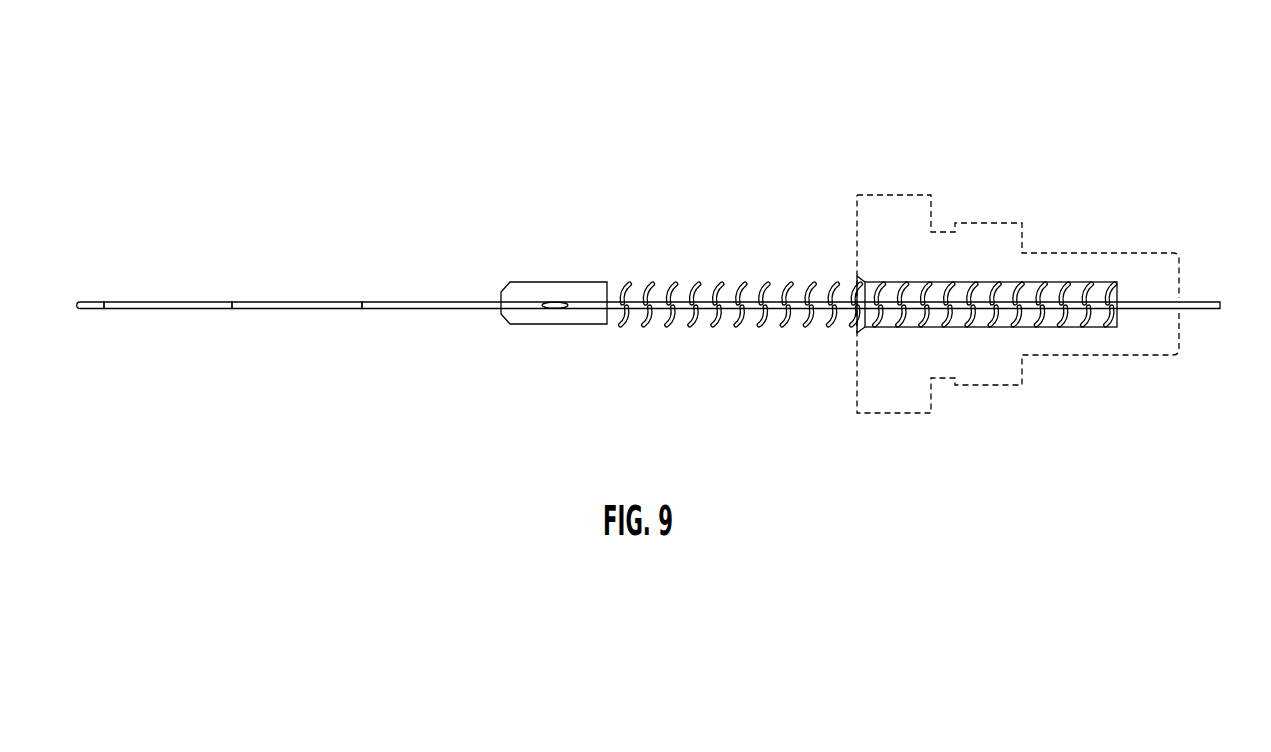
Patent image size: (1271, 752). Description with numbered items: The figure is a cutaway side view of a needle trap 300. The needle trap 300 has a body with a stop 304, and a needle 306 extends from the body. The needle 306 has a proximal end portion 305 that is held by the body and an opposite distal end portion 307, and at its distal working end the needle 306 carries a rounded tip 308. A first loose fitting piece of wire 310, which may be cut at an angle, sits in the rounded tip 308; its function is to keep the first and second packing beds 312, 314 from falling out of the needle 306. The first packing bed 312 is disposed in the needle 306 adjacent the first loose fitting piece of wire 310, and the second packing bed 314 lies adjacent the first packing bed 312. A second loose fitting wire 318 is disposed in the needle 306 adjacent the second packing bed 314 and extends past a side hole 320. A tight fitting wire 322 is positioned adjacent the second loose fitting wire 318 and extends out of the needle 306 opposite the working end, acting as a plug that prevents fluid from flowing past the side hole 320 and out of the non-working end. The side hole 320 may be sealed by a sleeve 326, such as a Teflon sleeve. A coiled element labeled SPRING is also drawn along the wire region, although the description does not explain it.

The needle trap 300 is at (702, 105).
The stop 304 is at (854, 394).
The proximal end portion 305 is at (108, 319).
The needle 306 is at (427, 266).
The distal end portion 307 is at (1147, 332).
The rounded tip 308 is at (80, 314).
The first loose fitting piece of wire 310 is at (92, 276).
The first packing bed 312 is at (157, 297).
The second packing bed 314 is at (290, 315).
The second loose fitting wire 318 is at (468, 317).
The side hole 320 is at (552, 281).
The tight fitting wire 322 is at (868, 304).
The sleeve 326 is at (572, 329).
The spring SPRING is at (732, 325).